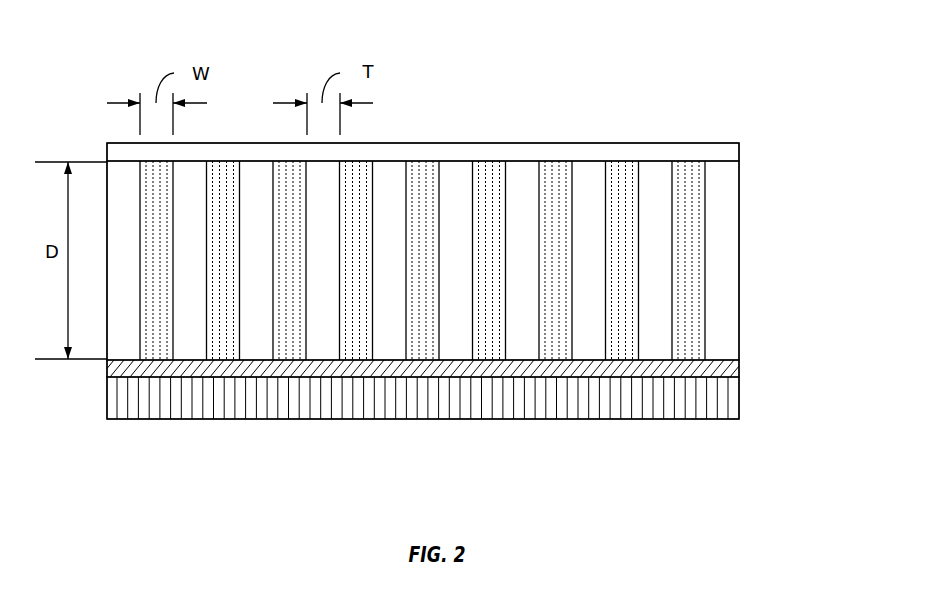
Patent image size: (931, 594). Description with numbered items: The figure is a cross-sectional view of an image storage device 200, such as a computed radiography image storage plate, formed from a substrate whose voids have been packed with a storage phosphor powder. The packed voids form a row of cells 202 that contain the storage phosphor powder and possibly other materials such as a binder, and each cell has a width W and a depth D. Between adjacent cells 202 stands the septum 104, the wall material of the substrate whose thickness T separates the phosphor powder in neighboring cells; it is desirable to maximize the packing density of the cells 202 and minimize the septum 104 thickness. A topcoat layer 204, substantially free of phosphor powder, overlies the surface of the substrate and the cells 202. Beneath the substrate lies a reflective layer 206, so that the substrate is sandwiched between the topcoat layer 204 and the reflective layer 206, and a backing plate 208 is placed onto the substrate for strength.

The image storage device 200 is at (702, 63).
The topcoat layer 204 is at (742, 147).
The septum 104 is at (587, 343).
The cells 202 is at (160, 337).
The reflective layer 206 is at (741, 366).
The backing plate 208 is at (741, 406).